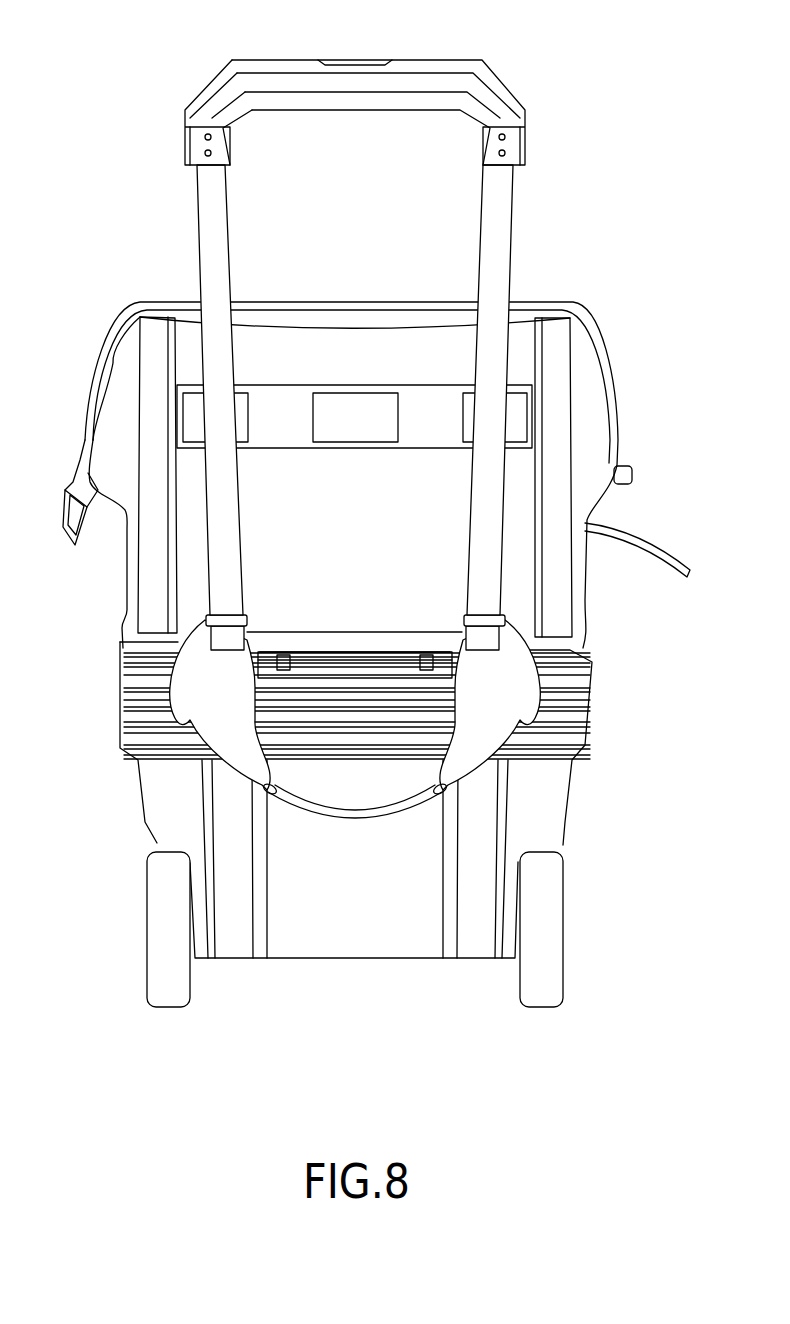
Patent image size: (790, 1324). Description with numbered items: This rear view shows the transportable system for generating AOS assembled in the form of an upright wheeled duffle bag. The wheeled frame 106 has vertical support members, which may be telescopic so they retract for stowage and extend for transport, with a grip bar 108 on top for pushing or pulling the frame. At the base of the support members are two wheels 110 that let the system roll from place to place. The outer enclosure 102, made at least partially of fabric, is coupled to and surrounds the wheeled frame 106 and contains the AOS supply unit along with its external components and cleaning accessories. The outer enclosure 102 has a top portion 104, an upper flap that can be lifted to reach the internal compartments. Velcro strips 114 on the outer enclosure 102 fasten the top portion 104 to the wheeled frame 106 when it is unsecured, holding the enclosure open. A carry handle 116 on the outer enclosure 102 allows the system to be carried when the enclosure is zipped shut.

The outer enclosure 102 is at (128, 562).
The top portion 104 is at (355, 302).
The wheeled frame 106 is at (497, 488).
The grip bar 108 is at (432, 62).
The wheels 110 is at (563, 915).
The Velcro strips 114 is at (520, 420).
The carry handle 116 is at (405, 812).